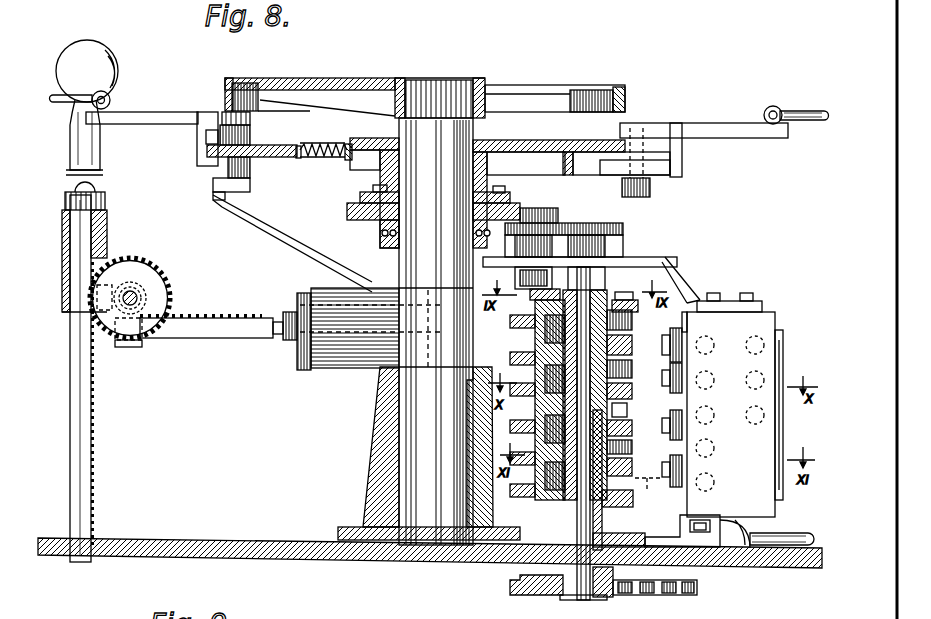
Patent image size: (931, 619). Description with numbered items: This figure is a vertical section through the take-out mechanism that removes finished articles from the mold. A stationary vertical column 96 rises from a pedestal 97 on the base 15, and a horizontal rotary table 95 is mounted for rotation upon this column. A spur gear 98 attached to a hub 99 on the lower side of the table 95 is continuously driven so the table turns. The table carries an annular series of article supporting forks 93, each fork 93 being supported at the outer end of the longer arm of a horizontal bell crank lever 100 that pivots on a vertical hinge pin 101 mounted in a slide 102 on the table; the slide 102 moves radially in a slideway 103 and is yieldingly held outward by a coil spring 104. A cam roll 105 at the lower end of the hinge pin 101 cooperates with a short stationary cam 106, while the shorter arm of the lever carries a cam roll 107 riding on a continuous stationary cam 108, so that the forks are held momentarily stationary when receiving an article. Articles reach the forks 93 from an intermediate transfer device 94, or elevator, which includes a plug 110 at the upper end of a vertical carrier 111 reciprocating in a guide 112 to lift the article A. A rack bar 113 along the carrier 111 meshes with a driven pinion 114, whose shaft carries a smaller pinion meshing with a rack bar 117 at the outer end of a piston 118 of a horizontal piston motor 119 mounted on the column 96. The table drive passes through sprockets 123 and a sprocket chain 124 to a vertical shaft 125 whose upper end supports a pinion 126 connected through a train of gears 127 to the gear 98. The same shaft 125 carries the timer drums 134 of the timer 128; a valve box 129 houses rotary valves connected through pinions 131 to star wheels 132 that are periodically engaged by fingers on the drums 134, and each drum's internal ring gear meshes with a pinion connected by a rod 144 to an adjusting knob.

The article A is at (93, 55).
The base 15 is at (318, 559).
The article supporting fork 93 is at (110, 100).
The intermediate transfer device 94 is at (111, 202).
The horizontal rotary table 95 is at (540, 136).
The stationary vertical column 96 is at (455, 96).
The pedestal 97 is at (387, 447).
The spur gear 98 is at (510, 210).
The hub 99 is at (490, 165).
The horizontal bell crank lever 100 is at (690, 105).
The vertical hinge pin 101 is at (206, 140).
The slide 102 is at (272, 146).
The slideway 103 is at (315, 143).
The coil spring 104 is at (306, 160).
The cam roll 105 is at (217, 187).
The short stationary cam 106 is at (222, 202).
The cam roll 107 is at (249, 83).
The continuous stationary cam 108 is at (625, 86).
The plug 110 is at (92, 185).
The vertical carrier 111 is at (80, 400).
The guide 112 is at (62, 313).
The rack bar 113 is at (90, 352).
The driven pinion 114 is at (190, 286).
The rack bar 117 is at (220, 331).
The piston 118 is at (281, 318).
The horizontal piston motor 119 is at (300, 292).
The sprockets 123 is at (602, 597).
The sprocket chain 124 is at (697, 590).
The vertical shaft 125 is at (626, 294).
The pinion 126 is at (620, 233).
The train of gears 127 is at (545, 209).
The timer 128 is at (672, 285).
The valve box 129 is at (778, 324).
The pinions 131 is at (680, 333).
The star wheels 132 is at (670, 385).
The timer drums 134 is at (630, 447).
The rod 144 is at (634, 352).